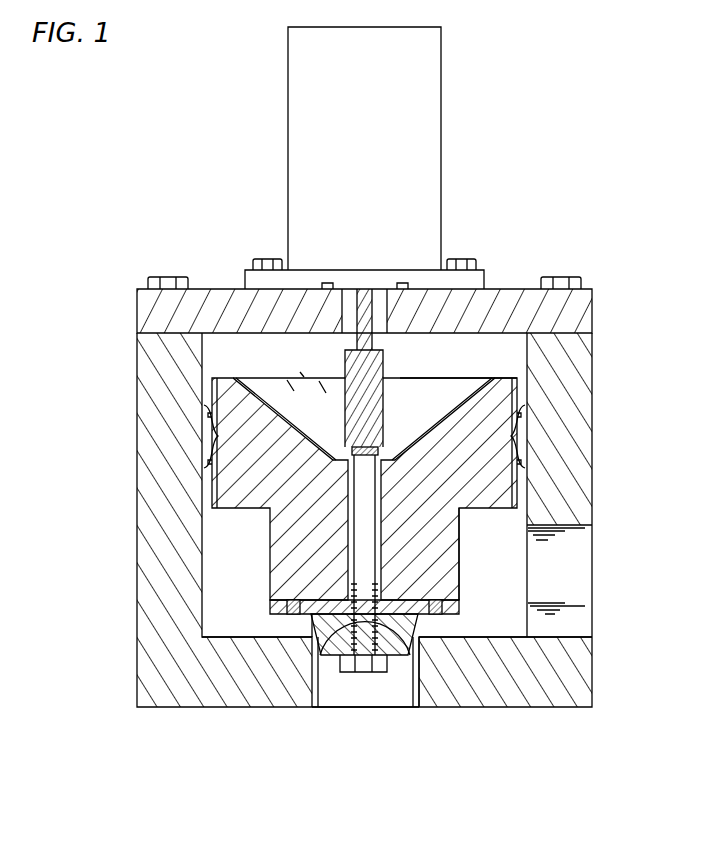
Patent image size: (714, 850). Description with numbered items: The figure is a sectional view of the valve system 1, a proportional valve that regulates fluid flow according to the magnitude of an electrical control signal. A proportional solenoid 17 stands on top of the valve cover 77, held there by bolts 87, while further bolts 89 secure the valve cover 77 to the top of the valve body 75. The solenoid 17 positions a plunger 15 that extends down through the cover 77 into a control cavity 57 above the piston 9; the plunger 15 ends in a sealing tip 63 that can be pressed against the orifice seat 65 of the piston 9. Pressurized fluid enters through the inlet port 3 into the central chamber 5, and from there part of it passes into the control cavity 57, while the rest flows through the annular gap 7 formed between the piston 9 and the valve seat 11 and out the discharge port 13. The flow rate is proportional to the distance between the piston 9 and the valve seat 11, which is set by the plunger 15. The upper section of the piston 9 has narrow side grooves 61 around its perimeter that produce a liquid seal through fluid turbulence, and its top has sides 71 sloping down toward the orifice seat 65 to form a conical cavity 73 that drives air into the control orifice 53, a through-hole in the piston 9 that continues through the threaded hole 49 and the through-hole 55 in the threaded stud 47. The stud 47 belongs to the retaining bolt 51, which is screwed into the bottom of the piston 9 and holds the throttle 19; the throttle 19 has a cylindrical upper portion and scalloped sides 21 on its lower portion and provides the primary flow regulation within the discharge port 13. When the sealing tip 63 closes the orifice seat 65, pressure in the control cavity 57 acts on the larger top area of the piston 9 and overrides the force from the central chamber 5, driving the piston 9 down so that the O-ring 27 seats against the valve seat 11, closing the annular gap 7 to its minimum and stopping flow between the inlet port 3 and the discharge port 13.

The valve system 1 is at (472, 203).
The inlet port 3 is at (586, 622).
The central chamber 5 is at (521, 589).
The annular gap 7 is at (300, 629).
The piston 9 is at (461, 550).
The valve seat 11 is at (431, 644).
The discharge port 13 is at (366, 700).
The plunger 15 is at (345, 366).
The proportional solenoid 17 is at (441, 113).
The throttle 19 is at (325, 648).
The scalloped sides 21 is at (414, 632).
The O-ring 27 is at (296, 600).
The threaded stud 47 is at (319, 652).
The threaded hole 49 is at (356, 566).
The retaining bolt 51 is at (376, 672).
The control orifice 53 is at (297, 516).
The through-hole 55 is at (383, 596).
The control cavity 57 is at (529, 360).
The narrow side grooves 61 is at (208, 416).
The sealing tip 63 is at (354, 446).
The orifice seat 65 is at (380, 457).
The sloping sides 71 is at (489, 366).
The conical cavity 73 is at (446, 378).
The valve body 75 is at (584, 380).
The valve cover 77 is at (146, 317).
The bolts 87 is at (266, 259).
The bolts 89 is at (165, 277).